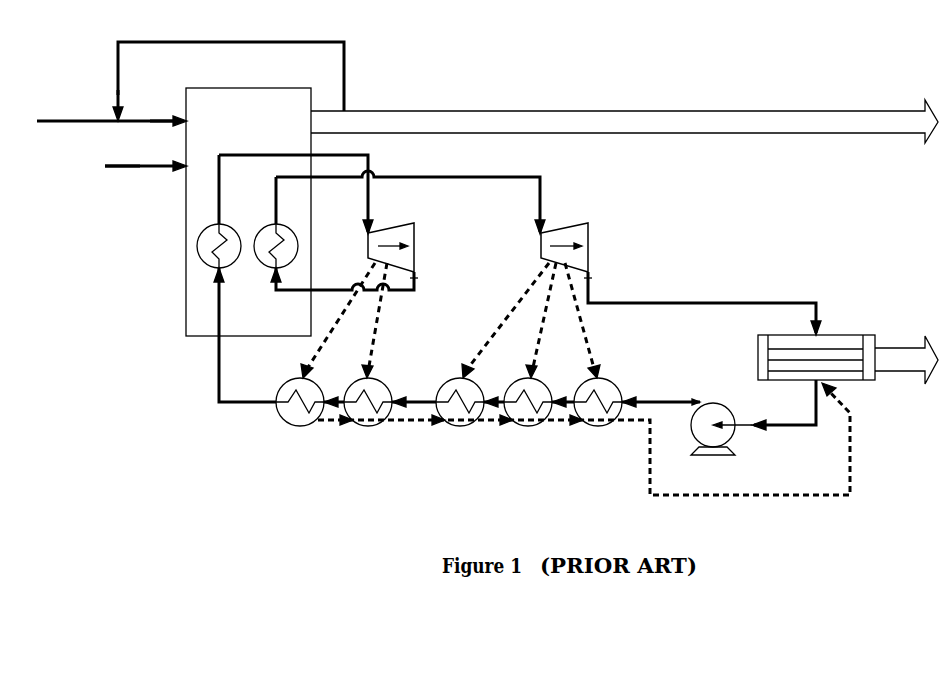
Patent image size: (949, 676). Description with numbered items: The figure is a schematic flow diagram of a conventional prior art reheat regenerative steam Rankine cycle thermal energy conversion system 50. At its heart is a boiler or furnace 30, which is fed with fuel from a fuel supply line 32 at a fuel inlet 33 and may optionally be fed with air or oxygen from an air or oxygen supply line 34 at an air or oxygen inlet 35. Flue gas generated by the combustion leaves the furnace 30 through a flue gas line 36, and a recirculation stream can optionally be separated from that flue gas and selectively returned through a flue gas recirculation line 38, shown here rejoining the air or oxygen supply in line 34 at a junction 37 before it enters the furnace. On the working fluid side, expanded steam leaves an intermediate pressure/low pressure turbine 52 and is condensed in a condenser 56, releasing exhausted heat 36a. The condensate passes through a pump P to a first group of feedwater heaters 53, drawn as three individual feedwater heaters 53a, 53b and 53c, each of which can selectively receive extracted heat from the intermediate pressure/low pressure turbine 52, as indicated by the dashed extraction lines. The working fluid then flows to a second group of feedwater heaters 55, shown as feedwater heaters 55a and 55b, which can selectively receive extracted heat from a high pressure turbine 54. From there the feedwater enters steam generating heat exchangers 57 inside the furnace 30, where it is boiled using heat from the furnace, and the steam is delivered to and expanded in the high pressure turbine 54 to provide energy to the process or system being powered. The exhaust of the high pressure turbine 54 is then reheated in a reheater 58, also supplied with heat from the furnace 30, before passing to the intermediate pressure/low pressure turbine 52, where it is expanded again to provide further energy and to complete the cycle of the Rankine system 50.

The boiler or furnace 30 is at (197, 296).
The fuel supply line 32 is at (140, 168).
The fuel inlet 33 is at (185, 162).
The air or oxygen supply line 34 is at (73, 119).
The air or oxygen inlet 35 is at (185, 117).
The flue gas line 36 is at (893, 111).
The exhausted heat 36a is at (895, 347).
The recycle stream inlet 37 is at (112, 119).
The flue gas recirculation line 38 is at (219, 40).
The reheat regenerative steam Rankine cycle thermal energy conversion system 50 is at (195, 379).
The intermediate pressure/low pressure turbine 52 is at (588, 233).
The first group of feedwater heaters 53 is at (531, 406).
The feedwater heater 53a is at (597, 428).
The feedwater heater 53b is at (527, 428).
The feedwater heater 53c is at (457, 428).
The high pressure turbine 54 is at (415, 233).
The second group of feedwater heaters 55 is at (335, 406).
The feedwater heater 55a is at (365, 428).
The feedwater heater 55b is at (297, 428).
The condenser 56 is at (850, 335).
The steam generating heat exchangers 57 is at (197, 250).
The reheater 58 is at (300, 250).
The pump P is at (700, 452).